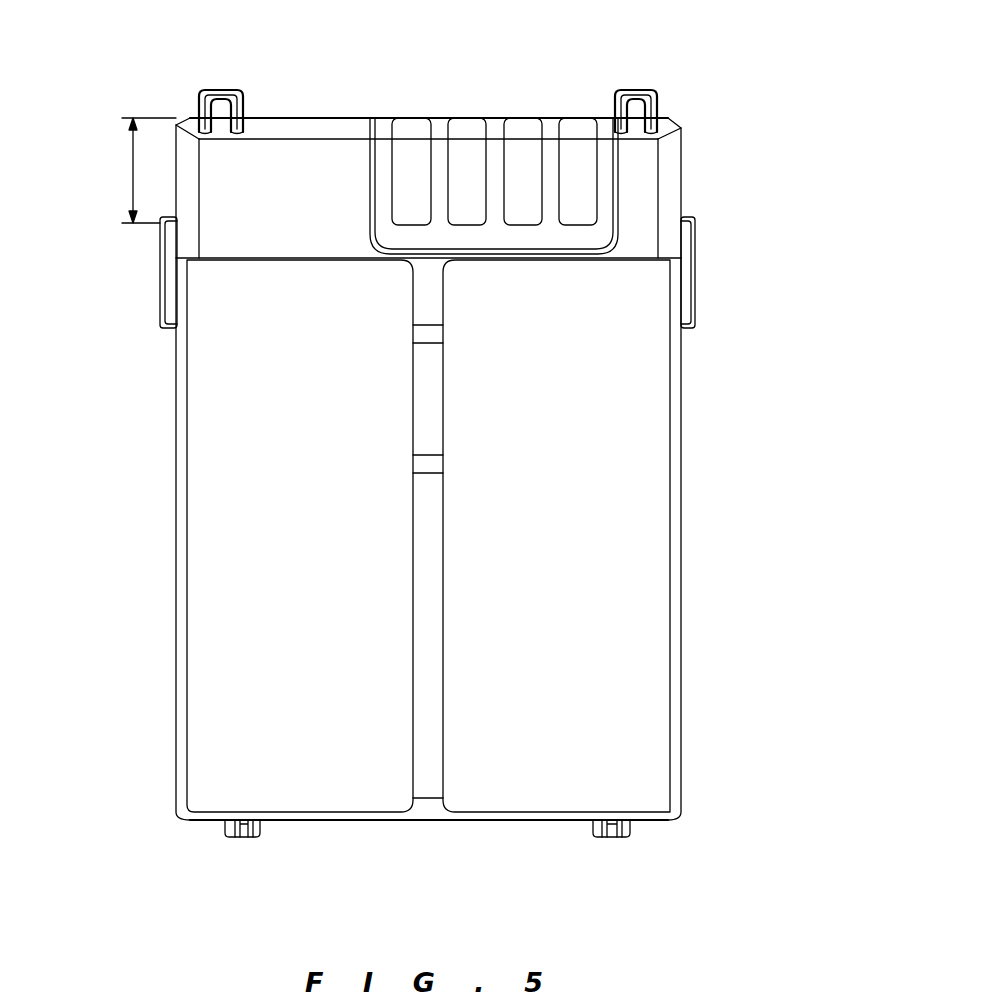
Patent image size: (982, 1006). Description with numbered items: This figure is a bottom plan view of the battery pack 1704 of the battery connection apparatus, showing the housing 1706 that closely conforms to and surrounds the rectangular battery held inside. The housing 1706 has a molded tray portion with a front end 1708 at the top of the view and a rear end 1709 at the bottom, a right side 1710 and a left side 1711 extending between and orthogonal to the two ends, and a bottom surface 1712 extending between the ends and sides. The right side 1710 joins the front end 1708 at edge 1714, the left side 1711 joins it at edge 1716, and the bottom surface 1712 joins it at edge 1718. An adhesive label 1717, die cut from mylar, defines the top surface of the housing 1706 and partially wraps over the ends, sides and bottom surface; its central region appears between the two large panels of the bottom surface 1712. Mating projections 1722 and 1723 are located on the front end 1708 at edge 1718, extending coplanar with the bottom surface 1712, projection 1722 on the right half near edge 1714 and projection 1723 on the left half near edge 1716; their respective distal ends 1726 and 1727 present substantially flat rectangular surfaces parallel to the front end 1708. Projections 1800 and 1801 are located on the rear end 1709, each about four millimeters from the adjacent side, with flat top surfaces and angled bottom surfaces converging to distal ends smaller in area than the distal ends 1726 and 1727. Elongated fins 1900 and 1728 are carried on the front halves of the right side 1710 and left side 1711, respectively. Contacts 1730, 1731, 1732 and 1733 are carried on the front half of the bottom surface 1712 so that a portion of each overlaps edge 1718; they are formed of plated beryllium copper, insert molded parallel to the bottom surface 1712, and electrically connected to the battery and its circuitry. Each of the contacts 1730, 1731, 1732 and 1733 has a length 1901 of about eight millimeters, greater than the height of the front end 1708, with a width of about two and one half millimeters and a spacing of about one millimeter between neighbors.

The battery pack 1704 is at (531, 471).
The housing 1706 is at (694, 130).
The front end 1708 is at (285, 117).
The rear end 1709 is at (408, 822).
The right side 1710 is at (683, 482).
The left side 1711 is at (176, 490).
The bottom surface 1712 is at (642, 193).
The edge 1714 is at (677, 118).
The edge 1716 is at (182, 117).
The adhesive label 1717 is at (442, 660).
The edge 1718 is at (343, 130).
The mating projection 1722 is at (604, 68).
The mating projection 1723 is at (209, 68).
The distal end 1726 is at (625, 90).
The distal end 1727 is at (224, 89).
The elongated fin 1728 is at (168, 297).
The contact 1730 is at (580, 213).
The contact 1731 is at (526, 213).
The contact 1732 is at (466, 213).
The contact 1733 is at (408, 213).
The mating projection 1800 is at (640, 836).
The mating projection 1801 is at (267, 831).
The elongated fin 1900 is at (685, 293).
The length 1901 is at (133, 176).